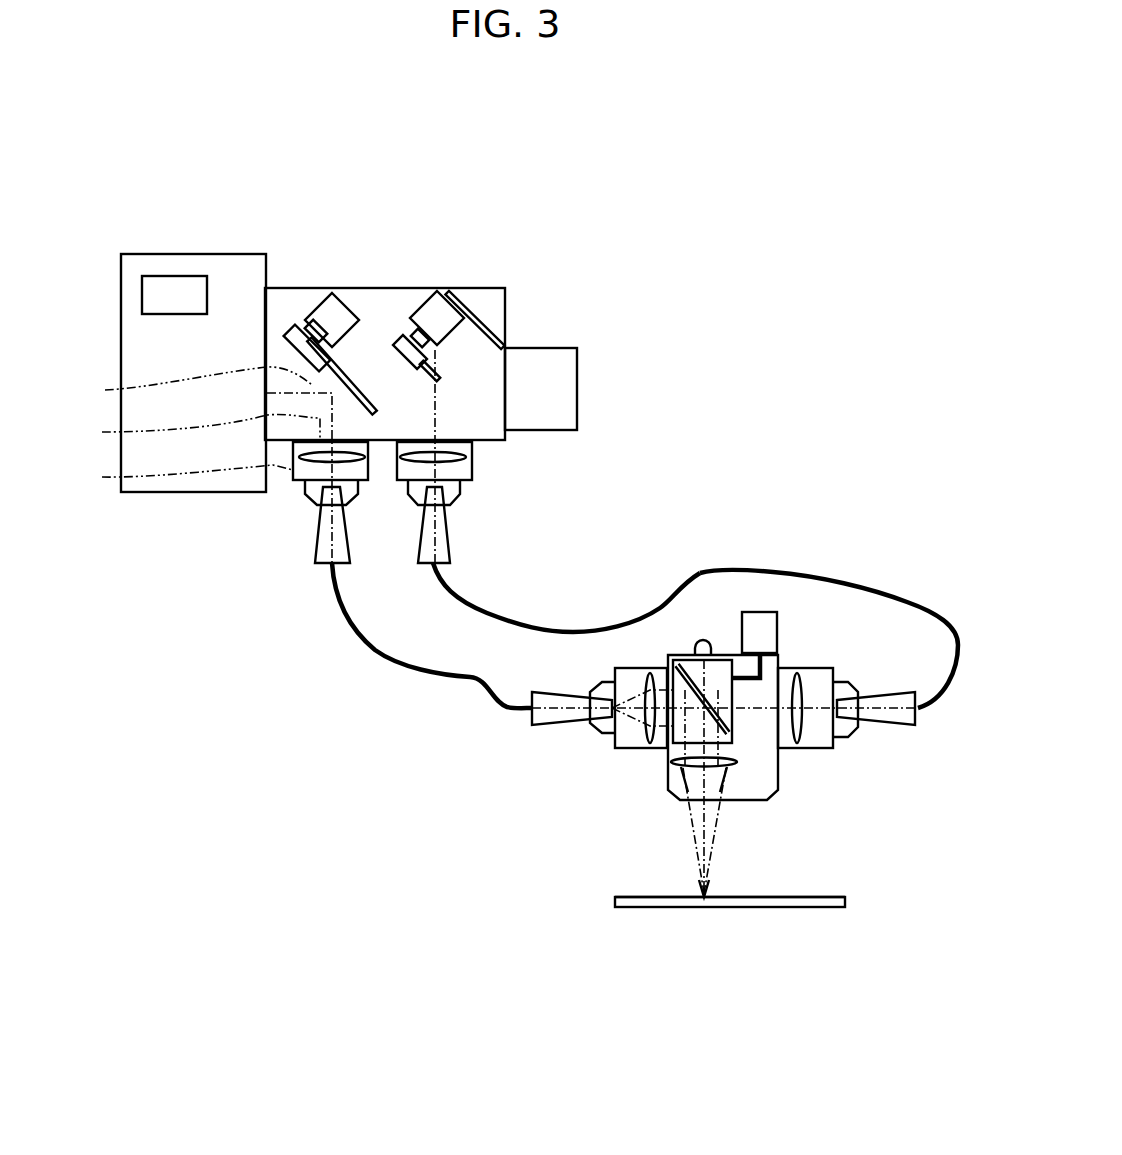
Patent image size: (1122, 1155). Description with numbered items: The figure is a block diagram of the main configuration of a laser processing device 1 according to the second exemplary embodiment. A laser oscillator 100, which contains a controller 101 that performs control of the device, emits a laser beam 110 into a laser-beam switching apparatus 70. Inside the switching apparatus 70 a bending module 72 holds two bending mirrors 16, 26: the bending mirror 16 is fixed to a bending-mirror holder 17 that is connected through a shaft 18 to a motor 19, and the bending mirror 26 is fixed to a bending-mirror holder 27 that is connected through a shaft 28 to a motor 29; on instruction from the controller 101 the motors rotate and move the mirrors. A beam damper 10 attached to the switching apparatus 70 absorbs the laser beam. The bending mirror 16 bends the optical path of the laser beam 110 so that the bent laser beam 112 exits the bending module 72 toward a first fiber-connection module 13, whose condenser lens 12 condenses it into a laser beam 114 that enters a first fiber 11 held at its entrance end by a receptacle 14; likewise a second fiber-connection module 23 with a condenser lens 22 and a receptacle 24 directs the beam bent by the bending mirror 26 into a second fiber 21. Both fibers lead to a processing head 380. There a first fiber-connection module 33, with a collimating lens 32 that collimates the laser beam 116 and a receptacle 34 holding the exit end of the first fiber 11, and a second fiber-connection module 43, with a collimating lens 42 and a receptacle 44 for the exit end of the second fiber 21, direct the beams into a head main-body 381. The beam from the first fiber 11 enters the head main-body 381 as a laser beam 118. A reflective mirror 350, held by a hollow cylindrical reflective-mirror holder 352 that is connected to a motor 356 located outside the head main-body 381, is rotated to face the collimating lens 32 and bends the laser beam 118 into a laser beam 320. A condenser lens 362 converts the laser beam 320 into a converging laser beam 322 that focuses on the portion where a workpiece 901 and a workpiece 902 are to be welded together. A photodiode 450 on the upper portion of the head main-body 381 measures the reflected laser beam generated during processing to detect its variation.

The laser processing device 1 is at (718, 308).
The beam damper 10 is at (553, 348).
The laser oscillator 100 is at (121, 350).
The controller 101 is at (142, 295).
The laser beam 110 is at (180, 387).
The laser beam 112 is at (184, 430).
The laser beam 114 is at (170, 474).
The first fiber 11 is at (360, 637).
The condenser lens 12 is at (358, 468).
The first fiber-connection module 13 is at (290, 445).
The receptacle 14 is at (303, 508).
The bending mirror 16 is at (357, 390).
The bending-mirror holder 17 is at (287, 333).
The shaft 18 is at (308, 338).
The motor 19 is at (332, 313).
The second fiber 21 is at (466, 597).
The condenser lens 22 is at (463, 483).
The second fiber-connection module 23 is at (485, 445).
The receptacle 24 is at (405, 505).
The bending mirror 26 is at (478, 326).
The bending-mirror holder 27 is at (395, 338).
The shaft 28 is at (407, 335).
The motor 29 is at (443, 292).
The collimating lens 32 is at (645, 688).
The first fiber-connection module 33 is at (590, 800).
The receptacle 34 is at (597, 690).
The collimating lens 42 is at (808, 688).
The second fiber-connection module 43 is at (782, 800).
The receptacle 44 is at (855, 690).
The laser-beam switching apparatus 70 is at (467, 392).
The bending module 72 is at (429, 331).
The laser beam 116 is at (610, 668).
The laser beam 118 is at (650, 752).
The laser beam 320 is at (650, 763).
The laser beam 322 is at (653, 832).
The reflective mirror 350 is at (760, 740).
The reflective-mirror holder 352 is at (722, 667).
The motor 356 is at (763, 612).
The condenser lens 362 is at (727, 768).
The processing head 380 is at (678, 704).
The head main-body 381 is at (780, 658).
The photodiode 450 is at (703, 638).
The workpiece 901 is at (653, 907).
The workpiece 902 is at (783, 907).